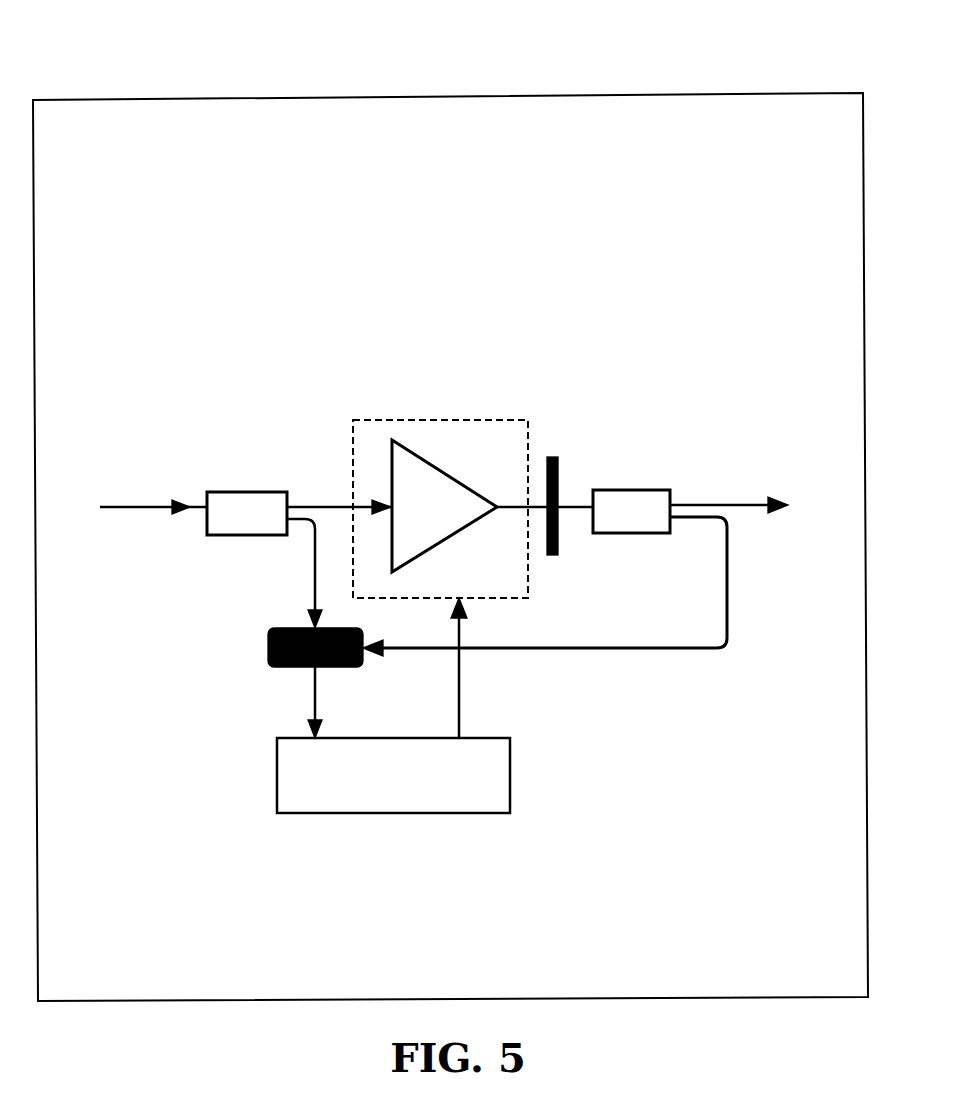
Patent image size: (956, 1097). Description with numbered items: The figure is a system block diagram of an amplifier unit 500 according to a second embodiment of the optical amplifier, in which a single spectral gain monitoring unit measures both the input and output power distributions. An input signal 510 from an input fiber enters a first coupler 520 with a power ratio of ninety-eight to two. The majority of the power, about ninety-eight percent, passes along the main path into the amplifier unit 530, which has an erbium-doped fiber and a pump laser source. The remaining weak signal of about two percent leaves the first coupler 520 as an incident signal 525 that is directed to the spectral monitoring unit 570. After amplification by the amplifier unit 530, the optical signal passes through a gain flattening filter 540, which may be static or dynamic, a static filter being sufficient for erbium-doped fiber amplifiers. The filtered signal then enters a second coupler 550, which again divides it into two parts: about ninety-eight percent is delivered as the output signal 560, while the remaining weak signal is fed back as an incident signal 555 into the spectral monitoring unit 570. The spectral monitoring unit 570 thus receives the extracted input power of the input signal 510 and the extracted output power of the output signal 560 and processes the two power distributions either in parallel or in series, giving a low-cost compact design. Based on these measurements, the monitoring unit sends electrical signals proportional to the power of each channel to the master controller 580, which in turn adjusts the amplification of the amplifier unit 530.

The amplifier unit 500 is at (422, 58).
The input signal 510 is at (130, 507).
The first coupler 520 is at (233, 493).
The incident signal 525 is at (315, 557).
The amplifier unit 530 is at (510, 427).
The gain flattening filter 540 is at (558, 455).
The second coupler 550 is at (662, 498).
The incident signal 555 is at (583, 648).
The output signal 560 is at (742, 505).
The spectral monitoring unit 570 is at (280, 668).
The master controller 580 is at (498, 783).